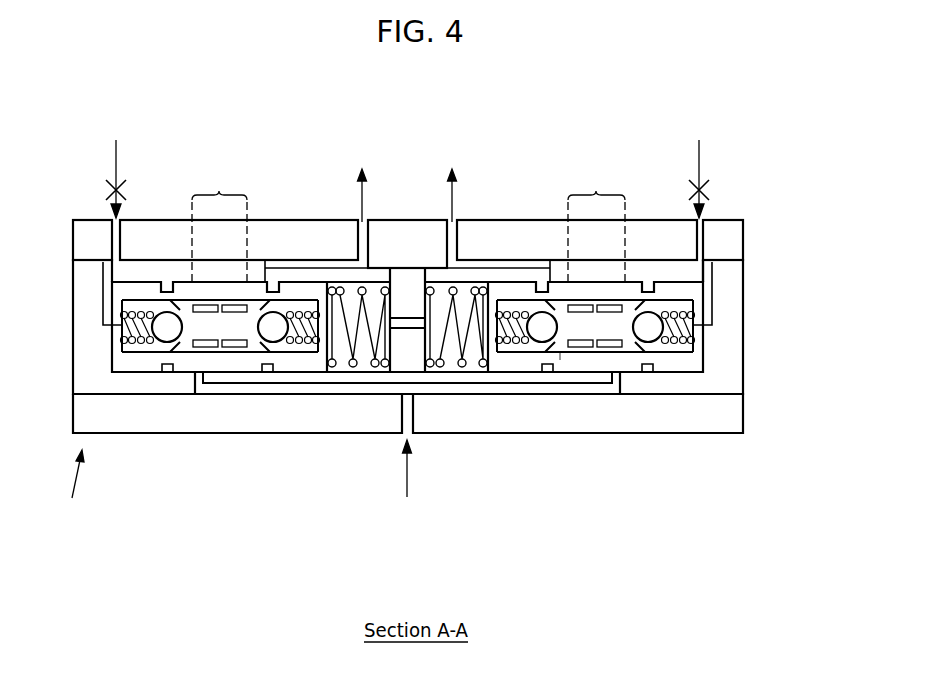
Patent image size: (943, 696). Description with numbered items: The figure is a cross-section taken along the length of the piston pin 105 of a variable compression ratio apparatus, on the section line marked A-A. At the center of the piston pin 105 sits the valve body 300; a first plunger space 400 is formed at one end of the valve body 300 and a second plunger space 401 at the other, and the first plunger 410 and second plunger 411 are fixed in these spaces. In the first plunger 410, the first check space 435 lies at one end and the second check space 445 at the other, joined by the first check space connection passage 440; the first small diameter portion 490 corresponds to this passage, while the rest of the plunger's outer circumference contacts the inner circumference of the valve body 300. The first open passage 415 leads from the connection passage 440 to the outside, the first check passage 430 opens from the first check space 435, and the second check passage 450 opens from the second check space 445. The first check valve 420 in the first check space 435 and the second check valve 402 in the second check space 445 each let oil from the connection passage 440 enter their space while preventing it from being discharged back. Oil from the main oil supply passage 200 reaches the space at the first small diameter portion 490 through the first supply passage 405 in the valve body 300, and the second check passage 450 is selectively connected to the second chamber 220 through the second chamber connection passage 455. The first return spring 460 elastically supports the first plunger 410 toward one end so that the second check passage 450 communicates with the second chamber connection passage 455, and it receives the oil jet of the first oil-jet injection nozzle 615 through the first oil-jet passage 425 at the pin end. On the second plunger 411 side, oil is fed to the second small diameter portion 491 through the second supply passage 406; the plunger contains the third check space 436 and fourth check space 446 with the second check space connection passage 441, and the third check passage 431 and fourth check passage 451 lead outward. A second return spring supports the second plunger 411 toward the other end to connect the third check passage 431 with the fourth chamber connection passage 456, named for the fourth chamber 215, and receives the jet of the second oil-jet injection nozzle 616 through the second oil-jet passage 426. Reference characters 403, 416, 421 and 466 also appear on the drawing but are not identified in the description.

The piston pin 105 is at (61, 489).
The main oil supply passage 200 is at (407, 481).
The fourth chamber 215 is at (452, 178).
The second chamber 220 is at (368, 178).
The valve body 300 is at (82, 313).
The first plunger space 400 is at (343, 366).
The second plunger space 401 is at (453, 366).
The second check valve 402 is at (272, 333).
The fourth ball 403 is at (658, 328).
The first supply passage 405 is at (203, 328).
The second supply passage 406 is at (615, 328).
The first plunger 410 is at (122, 362).
The second plunger 411 is at (688, 362).
The first open passage 415 is at (228, 345).
The second partition plate 416 is at (587, 345).
The first check valve 420 is at (163, 333).
The third valve seat 421 is at (560, 355).
The first oil-jet passage 425 is at (110, 271).
The second oil-jet passage 426 is at (700, 269).
The first check passage 430 is at (167, 287).
The third check passage 431 is at (548, 282).
The first check space 435 is at (110, 297).
The third check space 436 is at (543, 333).
The first check space connection passage 440 is at (170, 353).
The second check space connection passage 441 is at (680, 330).
The second check space 445 is at (308, 330).
The fourth check space 446 is at (692, 304).
The second check passage 450 is at (270, 262).
The fourth check passage 451 is at (645, 287).
The second chamber connection passage 455 is at (312, 266).
The fourth chamber connection passage 456 is at (475, 266).
The first return spring 460 is at (388, 281).
The third spring 466 is at (508, 330).
The first small diameter portion 490 is at (219, 224).
The second small diameter portion 491 is at (596, 224).
The first oil-jet injection nozzle 615 is at (116, 161).
The second oil-jet injection nozzle 616 is at (699, 161).